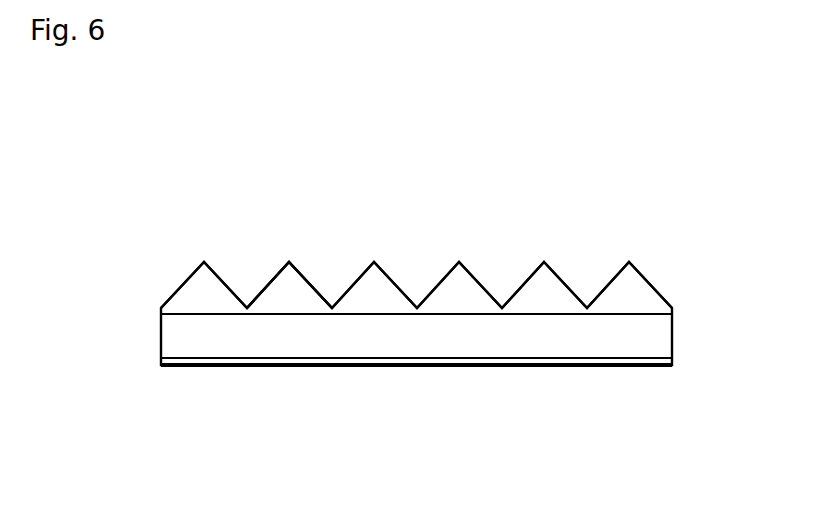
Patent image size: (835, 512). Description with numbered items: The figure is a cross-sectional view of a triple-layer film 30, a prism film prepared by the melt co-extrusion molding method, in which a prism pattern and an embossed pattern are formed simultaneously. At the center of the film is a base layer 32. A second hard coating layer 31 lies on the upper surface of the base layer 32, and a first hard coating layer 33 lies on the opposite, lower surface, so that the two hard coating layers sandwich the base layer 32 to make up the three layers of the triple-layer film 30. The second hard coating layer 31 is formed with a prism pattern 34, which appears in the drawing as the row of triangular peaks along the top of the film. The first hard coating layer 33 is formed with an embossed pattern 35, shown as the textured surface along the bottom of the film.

The triple-layer film 30 is at (152, 270).
The second hard coating layer 31 is at (632, 287).
The base layer 32 is at (635, 338).
The first hard coating layer 33 is at (462, 362).
The prism pattern 34 is at (307, 277).
The embossed pattern 35 is at (305, 370).